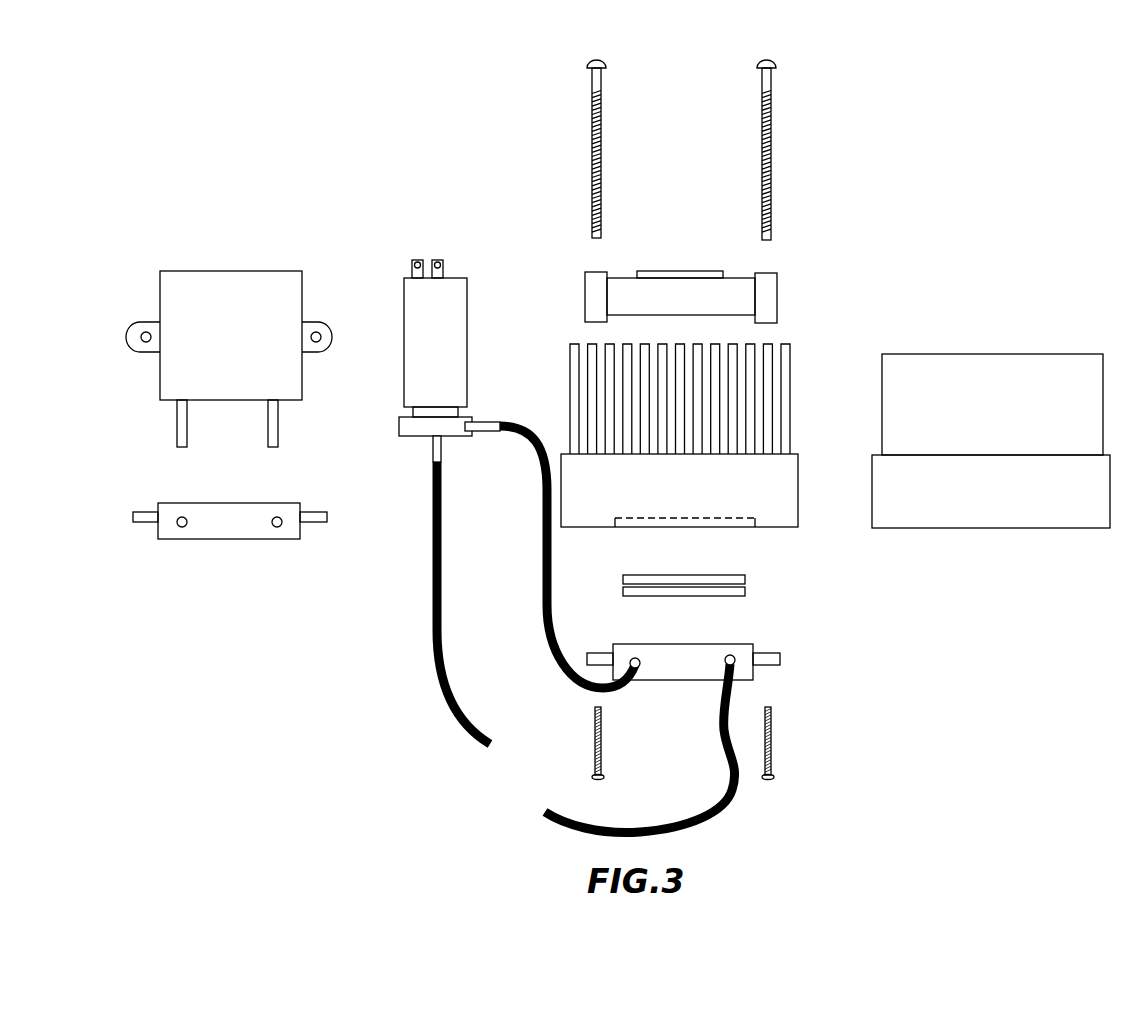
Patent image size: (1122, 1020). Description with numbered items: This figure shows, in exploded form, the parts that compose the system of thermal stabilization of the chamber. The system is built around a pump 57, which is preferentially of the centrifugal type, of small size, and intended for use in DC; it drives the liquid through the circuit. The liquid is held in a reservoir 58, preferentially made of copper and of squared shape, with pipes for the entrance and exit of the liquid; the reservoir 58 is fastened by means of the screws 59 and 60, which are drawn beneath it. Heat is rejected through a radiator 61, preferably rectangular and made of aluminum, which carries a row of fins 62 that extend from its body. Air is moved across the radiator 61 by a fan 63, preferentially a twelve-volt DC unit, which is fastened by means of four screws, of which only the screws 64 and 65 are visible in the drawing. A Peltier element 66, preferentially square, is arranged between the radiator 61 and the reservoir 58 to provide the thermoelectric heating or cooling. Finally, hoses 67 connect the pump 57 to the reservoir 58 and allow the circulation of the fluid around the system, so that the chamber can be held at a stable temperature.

The pump 57 is at (479, 292).
The reservoir 58 is at (246, 266).
The screw 59 is at (776, 750).
The screw 60 is at (606, 762).
The radiator 61 is at (878, 545).
The fins 62 is at (880, 378).
The fan 63 is at (781, 295).
The screw 64 is at (778, 148).
The screw 65 is at (606, 147).
The Peltier element 66 is at (739, 600).
The hoses 67 is at (582, 805).